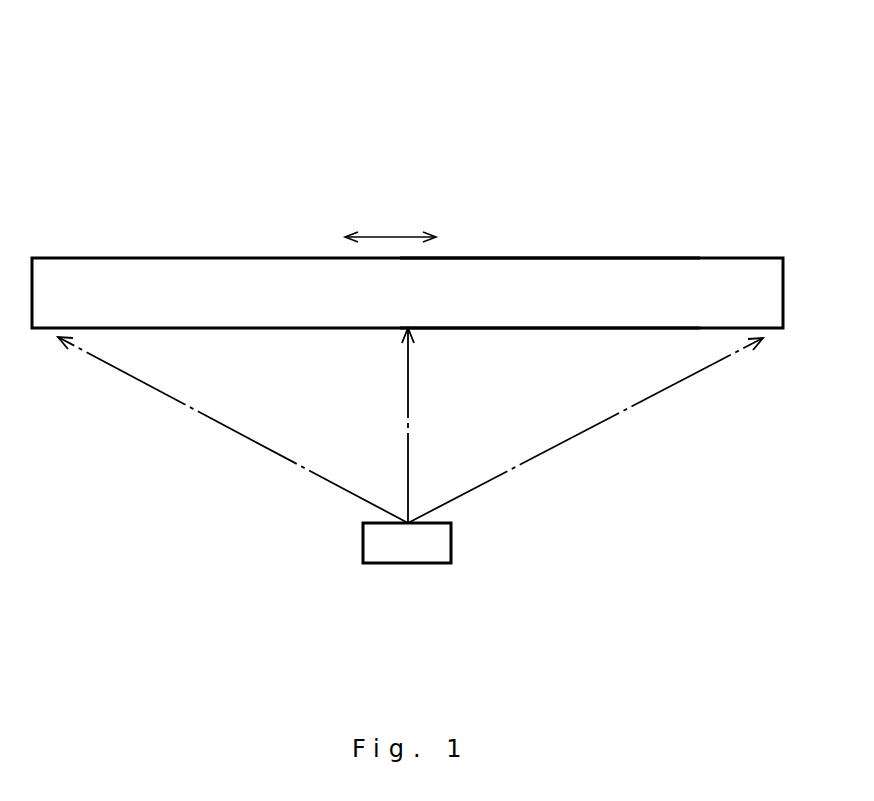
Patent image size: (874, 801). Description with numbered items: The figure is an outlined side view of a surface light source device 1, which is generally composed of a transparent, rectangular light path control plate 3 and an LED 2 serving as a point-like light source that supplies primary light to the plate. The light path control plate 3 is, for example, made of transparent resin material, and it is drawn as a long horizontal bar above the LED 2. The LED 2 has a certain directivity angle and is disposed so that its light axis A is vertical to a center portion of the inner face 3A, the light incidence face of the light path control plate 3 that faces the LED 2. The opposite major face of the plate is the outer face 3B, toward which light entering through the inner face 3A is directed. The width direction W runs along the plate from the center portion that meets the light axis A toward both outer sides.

The surface light source device 1 is at (600, 135).
The LED 2 is at (451, 540).
The light path control plate 3 is at (698, 259).
The inner face 3A is at (550, 330).
The outer face 3B is at (537, 259).
The light axis A is at (410, 433).
The width direction W is at (390, 221).